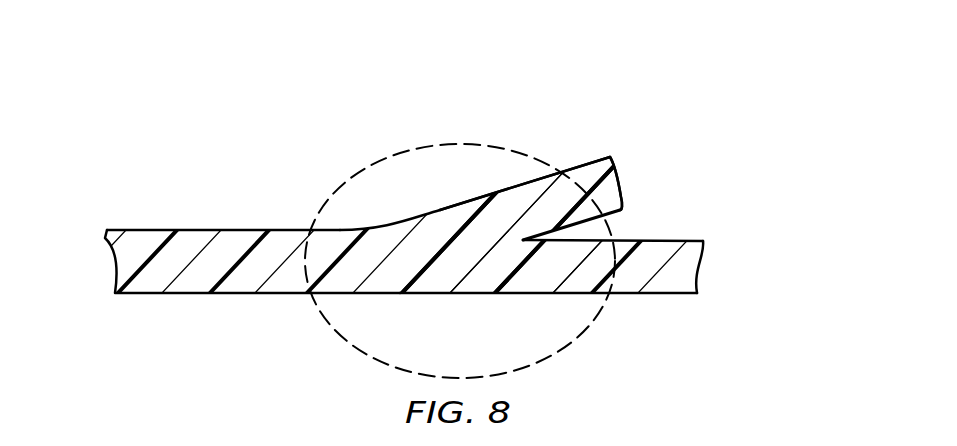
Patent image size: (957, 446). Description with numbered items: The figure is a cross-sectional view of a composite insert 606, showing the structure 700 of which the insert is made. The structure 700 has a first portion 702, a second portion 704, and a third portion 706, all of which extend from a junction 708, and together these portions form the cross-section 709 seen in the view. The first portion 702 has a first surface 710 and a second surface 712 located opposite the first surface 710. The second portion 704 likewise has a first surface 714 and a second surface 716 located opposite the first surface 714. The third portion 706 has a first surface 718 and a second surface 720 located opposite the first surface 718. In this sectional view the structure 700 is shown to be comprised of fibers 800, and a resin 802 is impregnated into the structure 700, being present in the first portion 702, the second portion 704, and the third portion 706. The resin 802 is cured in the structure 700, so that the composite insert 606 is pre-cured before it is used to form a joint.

The structure 700 is at (238, 362).
The first portion 702 is at (292, 230).
The second portion 704 is at (668, 240).
The third portion 706 is at (594, 158).
The junction 708 is at (580, 336).
The cross-section 709 is at (424, 93).
The first surface 710 is at (188, 295).
The second surface 712 is at (210, 230).
The first surface 714 is at (668, 294).
The second surface 716 is at (699, 272).
The first surface 718 is at (621, 211).
The second surface 720 is at (581, 168).
The composite insert 606 is at (661, 86).
The fibers 800 is at (438, 280).
The resin 802 is at (541, 283).